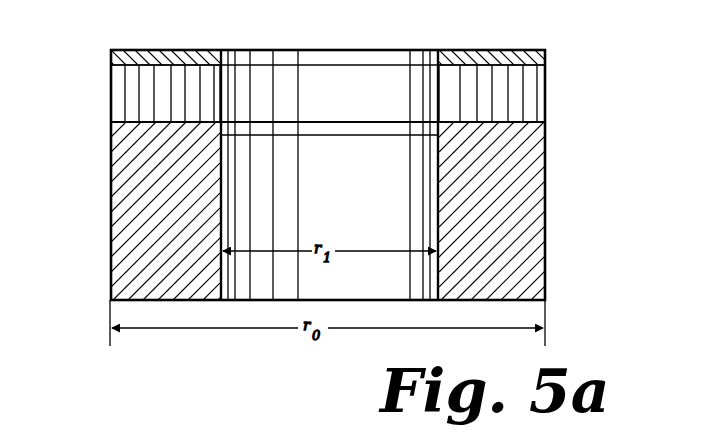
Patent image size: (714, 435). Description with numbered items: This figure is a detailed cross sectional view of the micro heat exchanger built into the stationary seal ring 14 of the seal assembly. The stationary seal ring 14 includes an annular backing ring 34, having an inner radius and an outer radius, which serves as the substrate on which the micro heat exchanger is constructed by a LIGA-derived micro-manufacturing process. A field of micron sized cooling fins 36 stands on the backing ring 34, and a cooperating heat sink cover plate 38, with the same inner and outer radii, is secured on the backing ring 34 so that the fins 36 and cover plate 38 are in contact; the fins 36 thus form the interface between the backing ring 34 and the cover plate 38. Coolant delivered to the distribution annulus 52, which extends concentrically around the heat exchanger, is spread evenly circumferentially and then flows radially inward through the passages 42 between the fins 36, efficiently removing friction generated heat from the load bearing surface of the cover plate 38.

The stationary seal ring 14 is at (606, 128).
The annular backing ring 34 is at (530, 206).
The cooling fins 36 is at (133, 105).
The heat sink cover plate 38 is at (475, 52).
The passages 42 is at (175, 78).
The distribution annulus 52 is at (113, 108).